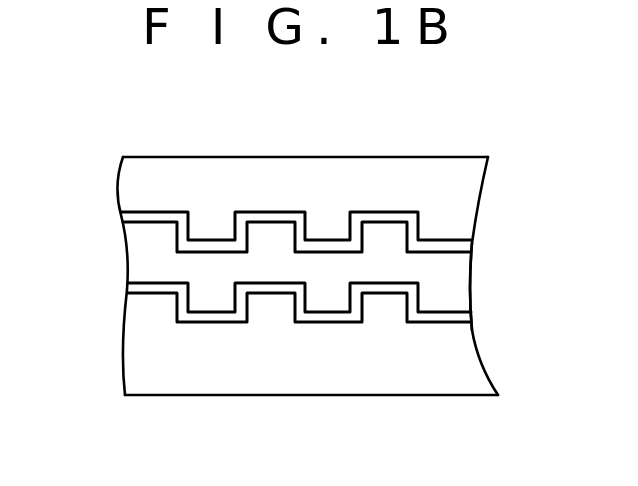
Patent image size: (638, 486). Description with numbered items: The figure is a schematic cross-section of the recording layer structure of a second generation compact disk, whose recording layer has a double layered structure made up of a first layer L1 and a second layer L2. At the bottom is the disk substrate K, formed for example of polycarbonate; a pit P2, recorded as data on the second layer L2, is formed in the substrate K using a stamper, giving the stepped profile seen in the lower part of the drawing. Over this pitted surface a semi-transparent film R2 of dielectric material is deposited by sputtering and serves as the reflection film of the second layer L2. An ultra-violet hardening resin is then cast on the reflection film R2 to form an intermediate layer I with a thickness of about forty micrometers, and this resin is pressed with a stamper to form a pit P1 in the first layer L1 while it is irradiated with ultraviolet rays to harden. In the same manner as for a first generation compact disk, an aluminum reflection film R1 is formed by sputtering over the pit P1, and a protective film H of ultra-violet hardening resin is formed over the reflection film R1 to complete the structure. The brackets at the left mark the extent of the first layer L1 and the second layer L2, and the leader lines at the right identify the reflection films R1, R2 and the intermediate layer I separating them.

The disk substrate K is at (275, 365).
The protective film H is at (418, 173).
The intermediate layer I is at (458, 280).
The first layer L1 is at (291, 188).
The second layer L2 is at (291, 327).
The aluminum reflection film R1 is at (466, 246).
The semi-transparent film R2 is at (466, 318).
The pit P1 is at (267, 235).
The pit P2 is at (380, 303).